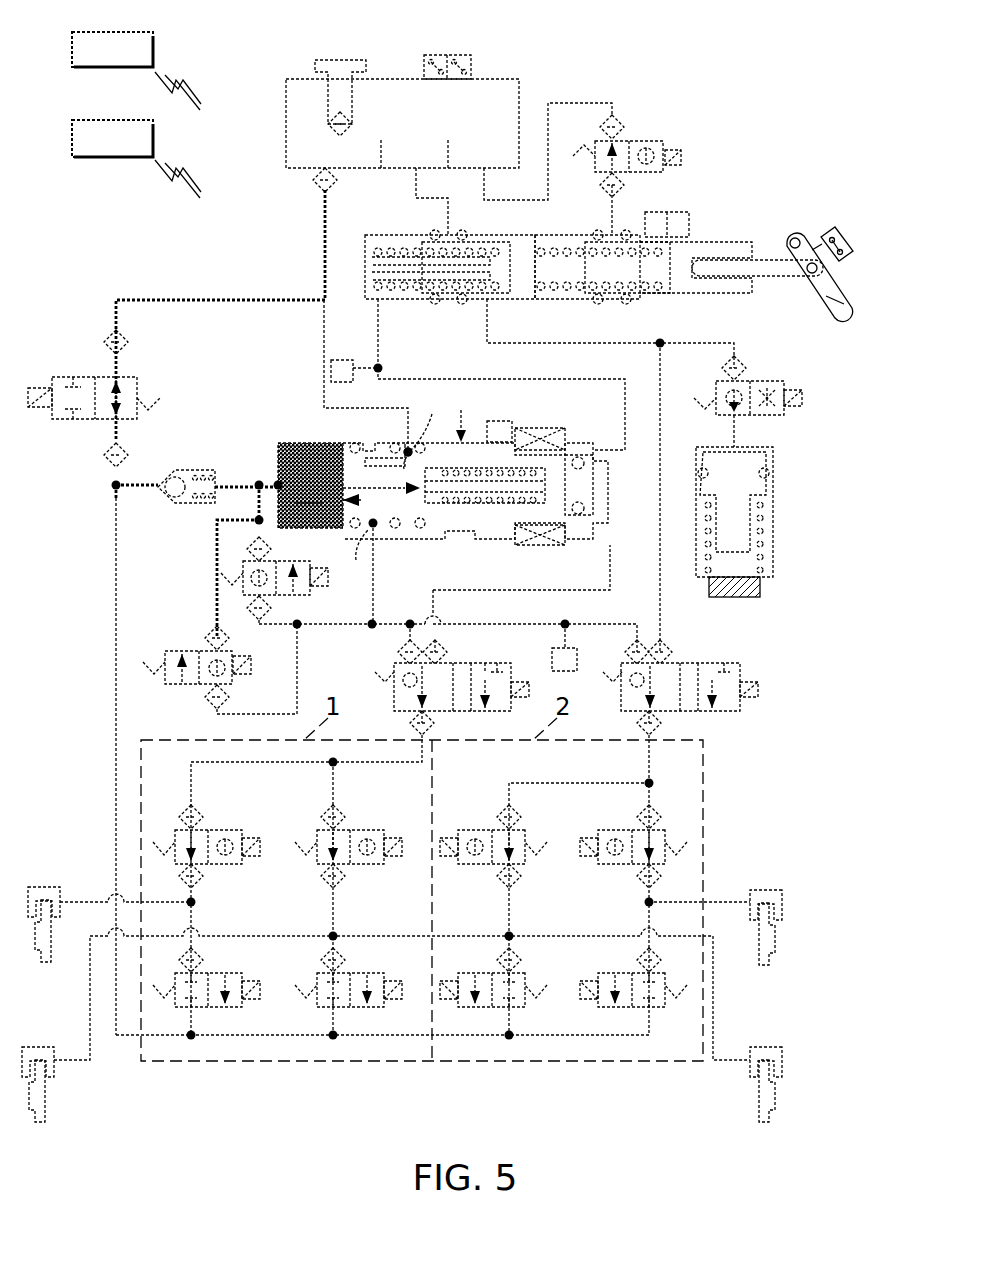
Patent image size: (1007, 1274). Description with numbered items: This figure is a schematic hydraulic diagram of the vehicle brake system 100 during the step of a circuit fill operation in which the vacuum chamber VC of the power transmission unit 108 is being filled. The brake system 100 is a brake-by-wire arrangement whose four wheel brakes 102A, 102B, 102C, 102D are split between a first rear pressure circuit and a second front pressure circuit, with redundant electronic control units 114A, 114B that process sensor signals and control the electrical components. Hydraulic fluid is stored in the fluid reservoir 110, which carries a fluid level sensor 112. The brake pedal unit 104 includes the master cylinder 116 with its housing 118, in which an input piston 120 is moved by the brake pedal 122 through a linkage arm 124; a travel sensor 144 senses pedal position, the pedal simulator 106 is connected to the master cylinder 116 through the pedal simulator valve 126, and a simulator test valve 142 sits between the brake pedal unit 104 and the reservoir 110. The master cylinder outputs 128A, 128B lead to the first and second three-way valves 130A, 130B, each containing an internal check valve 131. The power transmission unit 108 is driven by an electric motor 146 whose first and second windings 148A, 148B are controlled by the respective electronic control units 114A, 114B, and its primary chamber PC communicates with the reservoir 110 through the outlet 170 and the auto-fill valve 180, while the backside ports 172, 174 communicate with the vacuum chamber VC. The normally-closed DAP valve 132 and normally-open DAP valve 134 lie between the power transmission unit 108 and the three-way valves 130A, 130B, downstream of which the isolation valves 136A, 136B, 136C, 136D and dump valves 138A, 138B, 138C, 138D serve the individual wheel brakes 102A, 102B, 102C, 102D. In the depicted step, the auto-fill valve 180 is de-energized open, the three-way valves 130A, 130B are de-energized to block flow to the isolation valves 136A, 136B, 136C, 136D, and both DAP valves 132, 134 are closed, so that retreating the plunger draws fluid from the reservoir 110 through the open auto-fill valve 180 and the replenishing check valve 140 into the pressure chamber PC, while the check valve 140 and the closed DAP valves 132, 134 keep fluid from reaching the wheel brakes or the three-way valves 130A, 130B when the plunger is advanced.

The brake system 100 is at (688, 57).
The rear wheel brake 102A is at (66, 891).
The rear wheel brake 102B is at (54, 1070).
The front wheel brake 102C is at (782, 906).
The front wheel brake 102D is at (782, 1064).
The brake pedal unit 104 is at (778, 165).
The pedal simulator 106 is at (780, 545).
The power transmission unit 108 is at (300, 438).
The fluid reservoir 110 is at (497, 79).
The fluid level sensor 112 is at (460, 53).
The first electronic control unit 114A is at (80, 62).
The second electronic control unit 114B is at (80, 151).
The master cylinder 116 is at (537, 300).
The housing 118 is at (545, 237).
The input piston 120 is at (733, 242).
The brake pedal 122 is at (820, 290).
The linkage arm 124 is at (776, 260).
The pedal simulator valve 126 is at (762, 381).
The first master cylinder output 128A is at (384, 342).
The second master cylinder output 128B is at (513, 343).
The first three-way valve 130A is at (464, 663).
The second three-way valve 130B is at (734, 663).
The internal check valve 131 is at (406, 676).
The normally-closed DAP valve 132 is at (279, 561).
The normally-open DAP valve 134 is at (165, 651).
The isolation valve 136A is at (233, 830).
The isolation valve 136B is at (375, 830).
The isolation valve 136C is at (622, 830).
The isolation valve 136D is at (476, 830).
The dump valve 138A is at (238, 973).
The dump valve 138B is at (375, 973).
The dump valve 138C is at (622, 973).
The dump valve 138D is at (474, 973).
The replenishing check valve 140 is at (175, 470).
The simulator test valve 142 is at (645, 141).
The travel sensor 144 is at (680, 210).
The electric motor 146 is at (572, 527).
The first windings 148A is at (543, 428).
The second windings 148B is at (521, 608).
The outlet 170 is at (262, 480).
The backside port 172 is at (404, 449).
The backside port 174 is at (380, 528).
The auto-fill valve 180 is at (62, 377).